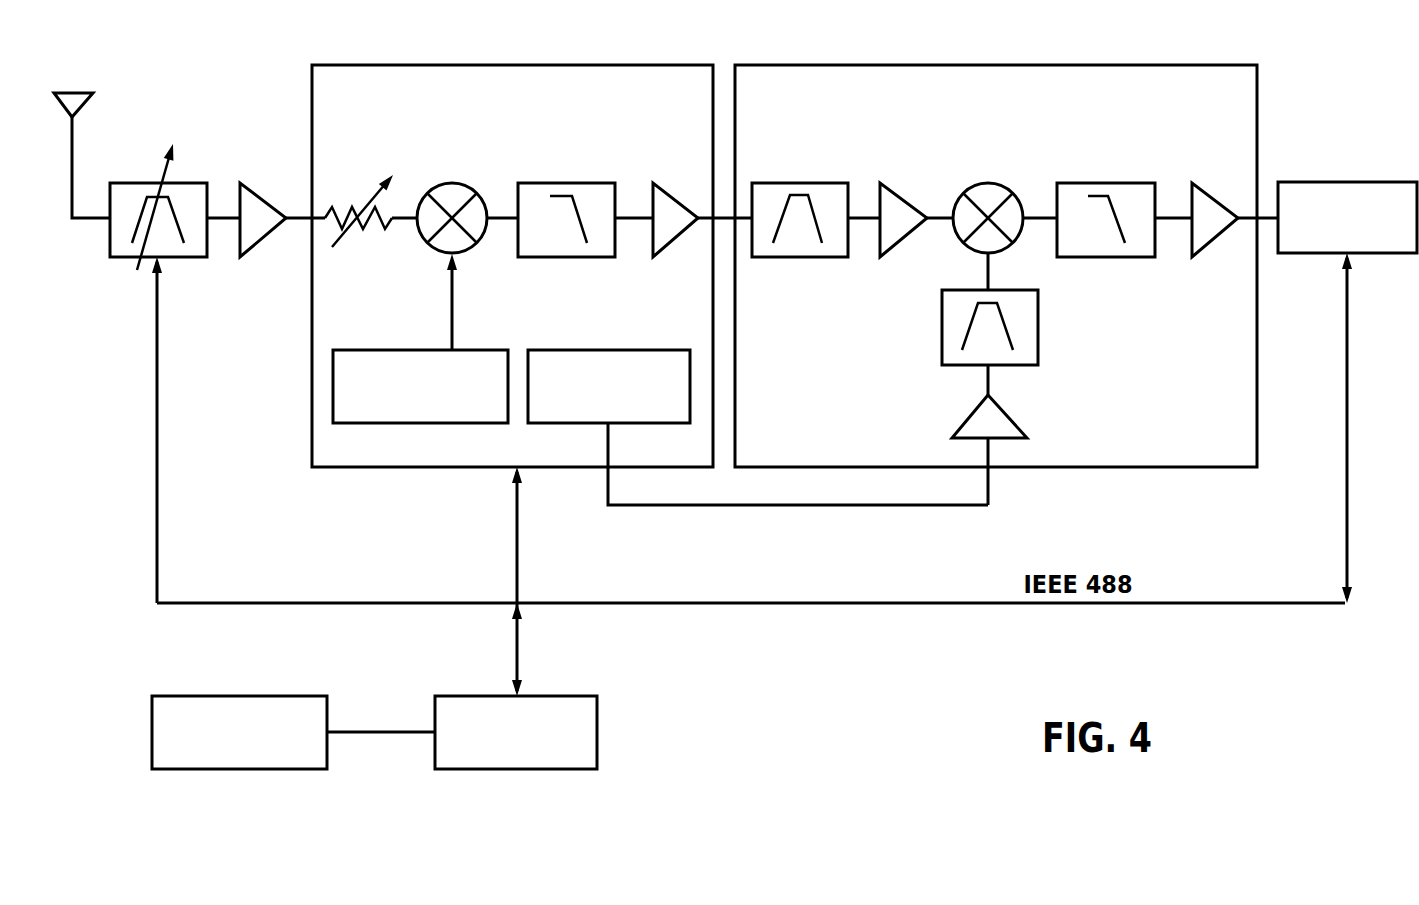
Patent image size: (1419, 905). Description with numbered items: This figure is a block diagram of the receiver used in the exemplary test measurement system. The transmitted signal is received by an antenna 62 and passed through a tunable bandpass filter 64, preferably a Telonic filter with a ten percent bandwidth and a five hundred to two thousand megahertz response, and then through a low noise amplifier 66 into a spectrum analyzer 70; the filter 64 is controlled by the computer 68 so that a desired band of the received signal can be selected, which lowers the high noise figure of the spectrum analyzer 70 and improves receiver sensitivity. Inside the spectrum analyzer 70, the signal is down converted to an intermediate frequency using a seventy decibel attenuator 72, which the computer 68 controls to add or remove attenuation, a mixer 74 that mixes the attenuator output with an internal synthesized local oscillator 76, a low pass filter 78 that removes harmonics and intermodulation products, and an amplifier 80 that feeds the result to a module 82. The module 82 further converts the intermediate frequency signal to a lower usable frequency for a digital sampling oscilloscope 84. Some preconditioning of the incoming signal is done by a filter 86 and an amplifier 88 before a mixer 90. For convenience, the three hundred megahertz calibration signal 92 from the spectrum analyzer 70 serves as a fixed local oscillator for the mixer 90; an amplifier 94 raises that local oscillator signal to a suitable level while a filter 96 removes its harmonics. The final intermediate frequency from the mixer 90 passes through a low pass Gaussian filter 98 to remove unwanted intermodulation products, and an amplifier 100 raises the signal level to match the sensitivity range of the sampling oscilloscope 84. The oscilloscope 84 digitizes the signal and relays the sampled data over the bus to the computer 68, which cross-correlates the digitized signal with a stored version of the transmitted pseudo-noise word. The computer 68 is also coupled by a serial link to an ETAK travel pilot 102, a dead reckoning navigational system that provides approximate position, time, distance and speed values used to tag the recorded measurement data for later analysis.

The antenna 62 is at (83, 88).
The tunable bandpass filter 64 is at (197, 181).
The low noise amplifier 66 is at (256, 192).
The computer 68 is at (572, 692).
The spectrum analyzer 70 is at (648, 62).
The attenuator 72 is at (356, 202).
The mixer 74 is at (455, 180).
The synthesized local oscillator 76 is at (485, 348).
The low pass filter 78 is at (589, 180).
The amplifier 80 is at (667, 182).
The module 82 is at (1130, 62).
The digital sampling oscilloscope 84 is at (1363, 180).
The filter 86 is at (825, 180).
The amplifier 88 is at (897, 188).
The mixer 90 is at (997, 182).
The 300 MHz calibration signal 92 is at (652, 348).
The amplifier 94 is at (1015, 422).
The filter 96 is at (1040, 322).
The low pass Gaussian filter 98 is at (1128, 182).
The amplifier 100 is at (1208, 185).
The ETAK travel pilot 102 is at (292, 692).